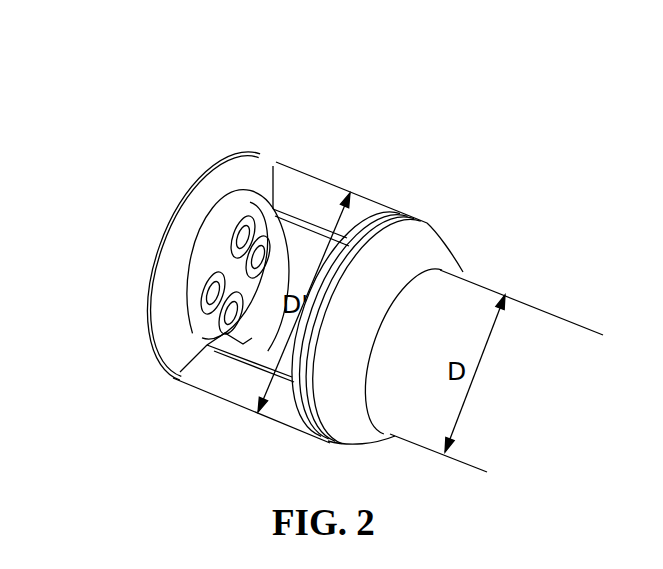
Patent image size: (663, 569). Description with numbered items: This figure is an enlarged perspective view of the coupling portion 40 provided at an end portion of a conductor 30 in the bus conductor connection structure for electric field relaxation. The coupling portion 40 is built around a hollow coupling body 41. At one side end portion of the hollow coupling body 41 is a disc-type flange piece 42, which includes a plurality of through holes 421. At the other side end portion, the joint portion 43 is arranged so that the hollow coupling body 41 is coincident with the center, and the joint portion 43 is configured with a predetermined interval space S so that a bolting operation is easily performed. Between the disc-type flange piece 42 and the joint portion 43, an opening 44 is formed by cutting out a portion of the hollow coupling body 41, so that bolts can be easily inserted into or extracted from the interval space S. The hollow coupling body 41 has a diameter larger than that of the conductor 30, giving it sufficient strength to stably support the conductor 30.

The conductor 30 is at (513, 322).
The coupling portion 40 is at (343, 133).
The hollow coupling body 41 is at (237, 370).
The disc-type flange piece 42 is at (223, 250).
The through holes 421 is at (203, 288).
The joint portion 43 is at (427, 247).
The opening 44 is at (291, 175).
The interval space S is at (175, 358).